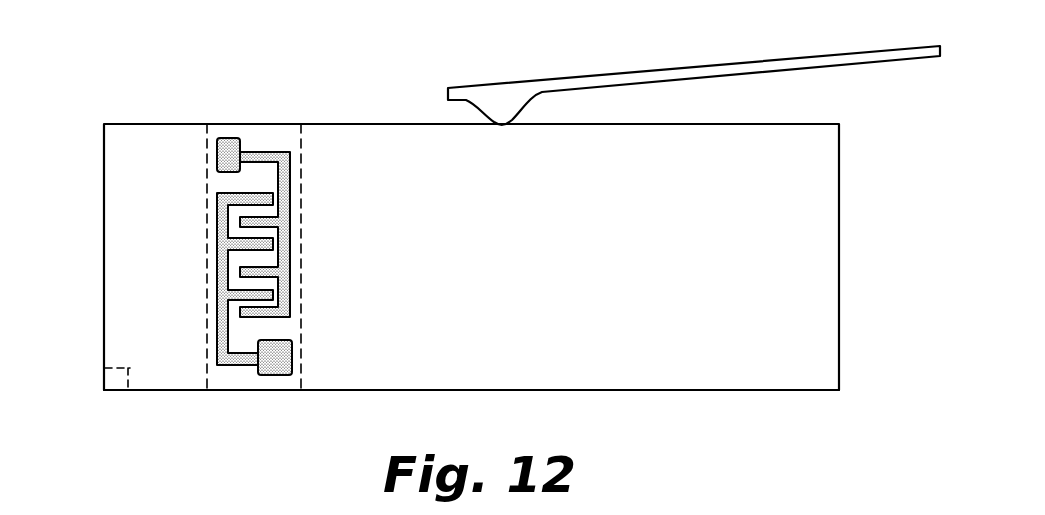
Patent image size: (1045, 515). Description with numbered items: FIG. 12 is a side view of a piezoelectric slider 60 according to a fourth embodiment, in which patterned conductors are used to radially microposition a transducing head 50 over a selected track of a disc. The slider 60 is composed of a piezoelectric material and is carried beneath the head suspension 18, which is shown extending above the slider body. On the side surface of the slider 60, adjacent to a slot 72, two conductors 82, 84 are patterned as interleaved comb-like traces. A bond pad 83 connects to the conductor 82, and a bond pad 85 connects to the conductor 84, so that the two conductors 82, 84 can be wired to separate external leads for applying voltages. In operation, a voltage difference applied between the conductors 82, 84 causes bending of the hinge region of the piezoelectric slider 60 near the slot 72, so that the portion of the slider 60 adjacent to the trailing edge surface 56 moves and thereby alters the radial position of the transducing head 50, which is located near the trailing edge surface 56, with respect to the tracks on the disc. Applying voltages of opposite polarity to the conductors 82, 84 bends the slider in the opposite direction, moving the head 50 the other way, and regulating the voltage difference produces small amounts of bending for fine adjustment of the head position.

The head suspension 18 is at (628, 73).
The transducing head 50 is at (132, 365).
The trailing edge surface 56 is at (103, 193).
The piezoelectric slider 60 is at (660, 390).
The slot 72 is at (291, 122).
The conductor 82 is at (245, 182).
The bond pad 83 is at (225, 138).
The conductor 84 is at (269, 323).
The bond pad 85 is at (277, 376).